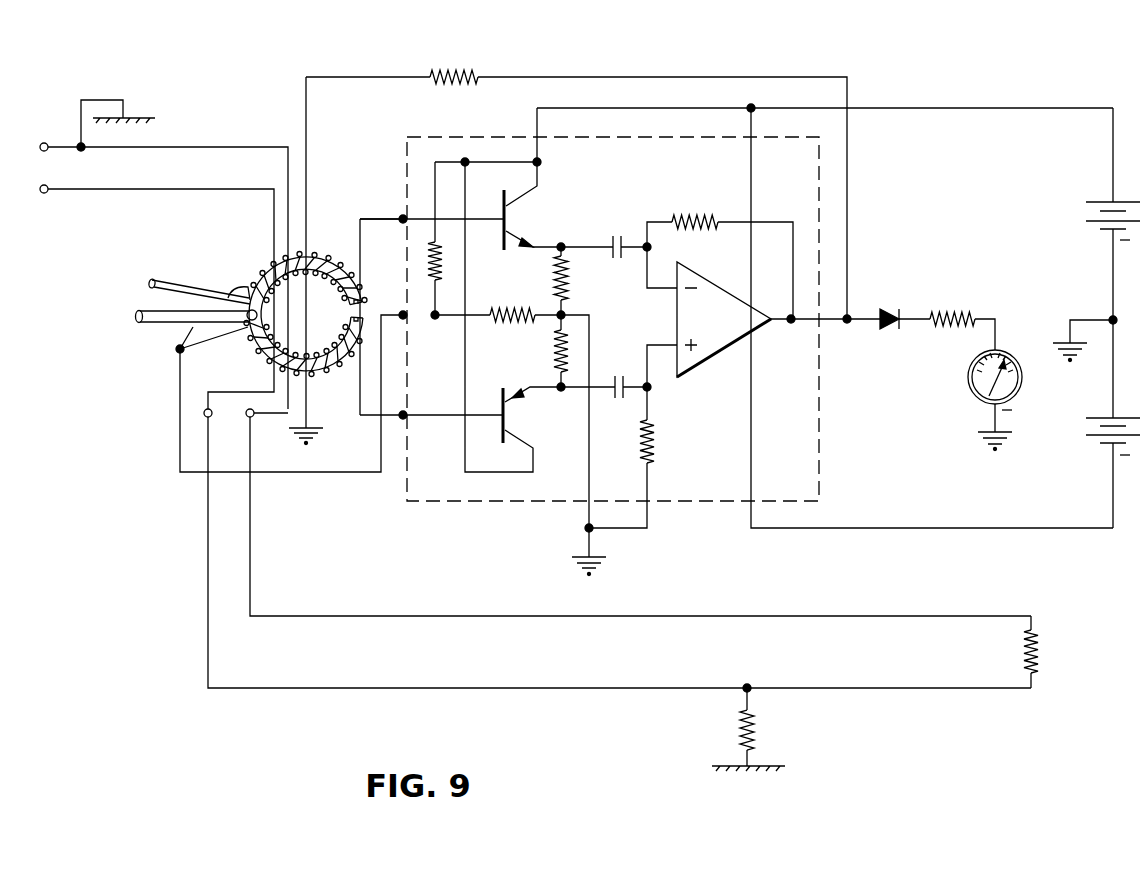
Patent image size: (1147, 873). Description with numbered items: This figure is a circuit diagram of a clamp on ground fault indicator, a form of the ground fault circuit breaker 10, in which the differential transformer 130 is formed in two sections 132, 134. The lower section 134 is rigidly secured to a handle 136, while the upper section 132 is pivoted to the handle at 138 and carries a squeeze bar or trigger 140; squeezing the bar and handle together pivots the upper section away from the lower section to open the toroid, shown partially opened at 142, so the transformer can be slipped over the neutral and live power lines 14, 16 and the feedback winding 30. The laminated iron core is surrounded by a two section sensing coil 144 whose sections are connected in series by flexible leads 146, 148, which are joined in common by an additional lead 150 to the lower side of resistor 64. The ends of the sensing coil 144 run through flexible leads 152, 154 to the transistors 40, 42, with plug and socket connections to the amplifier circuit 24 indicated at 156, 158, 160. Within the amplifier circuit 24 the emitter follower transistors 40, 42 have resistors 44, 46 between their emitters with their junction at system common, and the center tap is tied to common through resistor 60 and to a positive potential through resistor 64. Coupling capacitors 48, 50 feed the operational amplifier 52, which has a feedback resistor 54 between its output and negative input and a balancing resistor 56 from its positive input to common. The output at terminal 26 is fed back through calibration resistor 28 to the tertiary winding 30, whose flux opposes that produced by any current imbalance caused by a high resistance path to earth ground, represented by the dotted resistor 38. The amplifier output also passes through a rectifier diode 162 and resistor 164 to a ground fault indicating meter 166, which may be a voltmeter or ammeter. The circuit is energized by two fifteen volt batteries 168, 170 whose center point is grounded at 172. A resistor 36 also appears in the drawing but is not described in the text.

The ground fault circuit breaker 10 is at (880, 94).
The neutral power line 14 is at (212, 147).
The live power line 16 is at (212, 190).
The high gain differential amplifier 24 is at (820, 447).
The output terminal 26 is at (847, 323).
The calibration resistor 28 is at (448, 70).
The tertiary single turn winding 30 is at (305, 112).
The resistor 36 is at (1040, 648).
The dotted resistor 38 is at (736, 729).
The transistor 40 is at (522, 214).
The transistor 42 is at (514, 420).
The resistor 44 is at (570, 274).
The resistor 46 is at (552, 358).
The coupling capacitor 48 is at (610, 236).
The coupling capacitor 50 is at (614, 402).
The operational amplifier 52 is at (718, 340).
The feedback resistor 54 is at (698, 216).
The balancing resistor 56 is at (658, 440).
The resistor 60 is at (516, 308).
The resistor 64 is at (444, 264).
The ground fault or differential transformer 130 is at (243, 342).
The upper section 132 is at (266, 270).
The lower section 134 is at (266, 362).
The handle 136 is at (140, 311).
The pivot 138 is at (306, 314).
The squeeze bar or trigger 140 is at (178, 280).
The partially opened toroid 142 is at (362, 302).
The two section sensing coil 144 is at (335, 258).
The flexible lead 146 is at (178, 347).
The flexible lead 148 is at (230, 341).
The additional lead 150 is at (312, 478).
The flexible lead 152 is at (366, 203).
The flexible lead 154 is at (355, 418).
The plug and socket connection 156 is at (401, 215).
The plug and socket connection 158 is at (406, 318).
The plug and socket connection 160 is at (408, 420).
The rectifier diode 162 is at (890, 308).
The resistor 164 is at (962, 310).
The ground fault indicating meter 166 is at (966, 380).
The battery 168 is at (1094, 226).
The battery 170 is at (1080, 418).
The ground 172 is at (1078, 320).